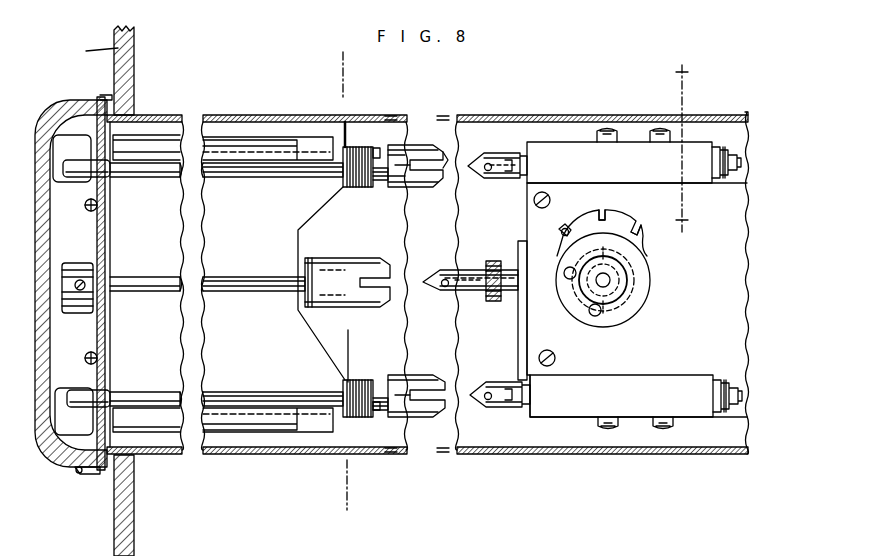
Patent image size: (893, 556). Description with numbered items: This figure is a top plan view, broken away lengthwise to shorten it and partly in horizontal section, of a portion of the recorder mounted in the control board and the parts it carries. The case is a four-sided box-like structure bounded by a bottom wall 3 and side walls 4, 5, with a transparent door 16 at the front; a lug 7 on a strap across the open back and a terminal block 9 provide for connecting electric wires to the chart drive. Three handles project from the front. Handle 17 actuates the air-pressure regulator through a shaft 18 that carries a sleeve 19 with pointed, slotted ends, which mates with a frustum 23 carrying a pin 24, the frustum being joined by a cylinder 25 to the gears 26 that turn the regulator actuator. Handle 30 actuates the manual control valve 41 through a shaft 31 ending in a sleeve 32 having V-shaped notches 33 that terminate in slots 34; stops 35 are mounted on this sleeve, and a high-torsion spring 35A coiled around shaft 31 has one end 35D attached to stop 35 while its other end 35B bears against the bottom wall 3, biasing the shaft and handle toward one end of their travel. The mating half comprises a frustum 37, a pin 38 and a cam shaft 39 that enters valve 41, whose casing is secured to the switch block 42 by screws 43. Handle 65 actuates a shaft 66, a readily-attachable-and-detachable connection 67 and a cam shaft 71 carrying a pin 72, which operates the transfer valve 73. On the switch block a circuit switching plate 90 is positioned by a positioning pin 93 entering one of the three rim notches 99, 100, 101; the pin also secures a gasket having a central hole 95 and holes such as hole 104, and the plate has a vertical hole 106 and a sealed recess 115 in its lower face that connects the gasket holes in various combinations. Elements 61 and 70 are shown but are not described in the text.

The bottom wall 3 is at (738, 415).
The side wall 4 is at (248, 114).
The side wall 5 is at (267, 456).
The lug 7 is at (692, 81).
The terminal block 9 is at (334, 66).
The transparent door 16 is at (44, 348).
The handle 17 is at (62, 285).
The shaft 18 is at (208, 277).
The sleeve 19 is at (347, 257).
The frustum 23 is at (432, 272).
The pin 24 is at (444, 288).
The cylinder 25 is at (474, 269).
The gears 26 is at (495, 302).
The handle 30 is at (62, 156).
The shaft 31 is at (208, 180).
The sleeve 32 is at (410, 150).
The V-shaped notches 33 is at (452, 112).
The slot 34 is at (420, 165).
The stop 35 is at (381, 150).
The high-torsion spring 35A is at (362, 188).
The spring end 35B is at (343, 130).
The spring end 35D is at (378, 160).
The frustum 37 is at (475, 153).
The pin 38 is at (489, 163).
The cam shaft 39 is at (510, 171).
The manual control valve 41 is at (578, 124).
The switch block 42 is at (510, 346).
The screws 43 is at (660, 130).
The mounting plate 61 is at (737, 313).
The handle 65 is at (68, 419).
The shaft 66 is at (208, 392).
The readily-attachable-and-detachable connection 67 is at (423, 376).
The lower spring 70 is at (378, 418).
The cam shaft 71 is at (475, 407).
The pin 72 is at (510, 407).
The transfer valve 73 is at (573, 432).
The circuit switching plate 90 is at (673, 254).
The positioning pin 93 is at (567, 228).
The central hole 95 is at (607, 282).
The notch 99 is at (560, 228).
The notch 100 is at (602, 209).
The notch 101 is at (641, 228).
The hole 104 is at (594, 317).
The vertical hole 106 is at (566, 267).
The sealed recess 115 is at (633, 271).